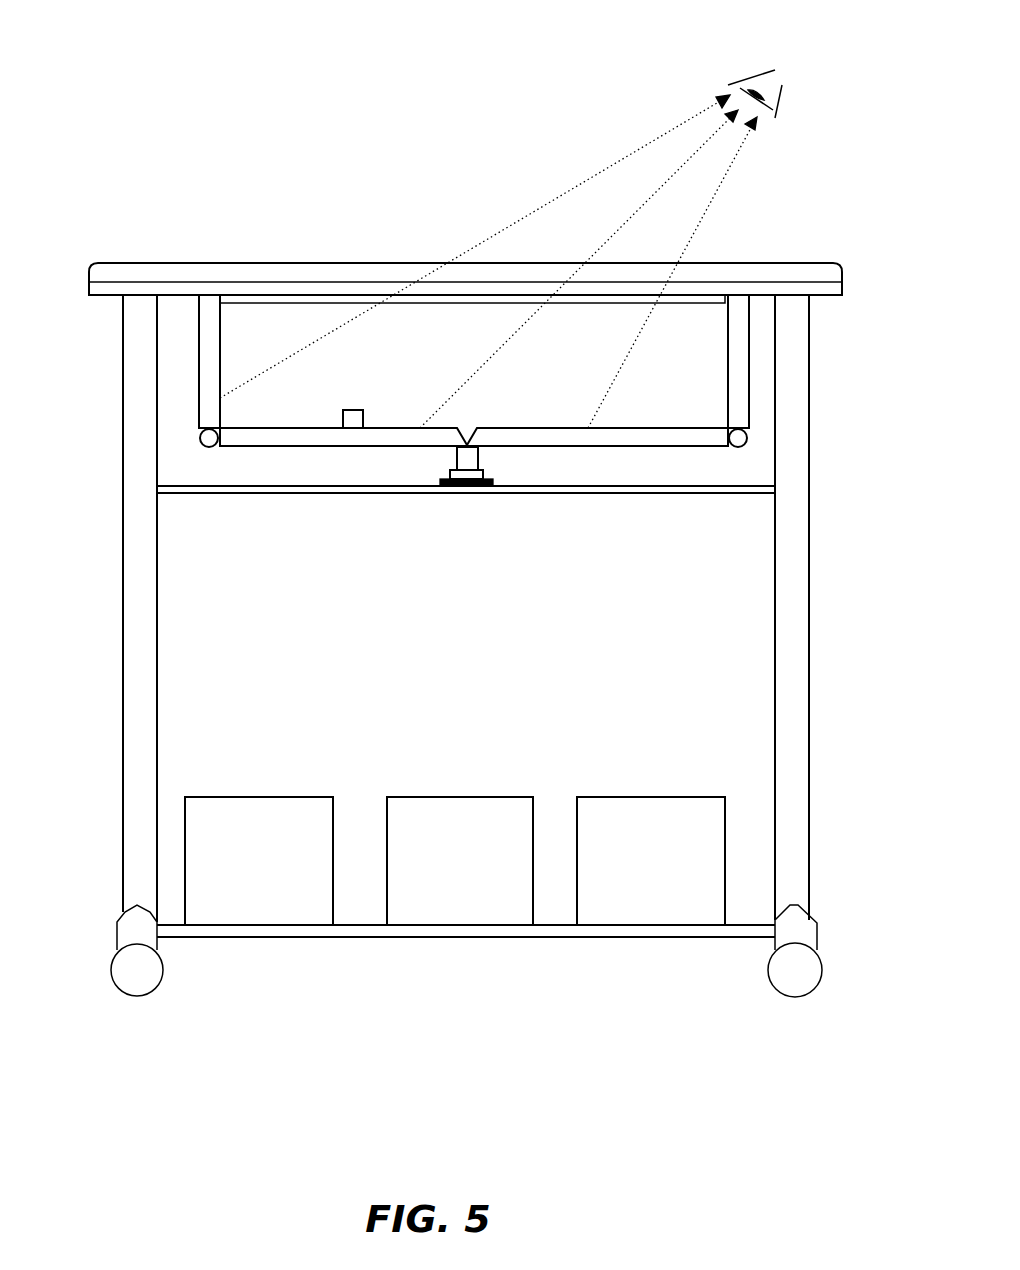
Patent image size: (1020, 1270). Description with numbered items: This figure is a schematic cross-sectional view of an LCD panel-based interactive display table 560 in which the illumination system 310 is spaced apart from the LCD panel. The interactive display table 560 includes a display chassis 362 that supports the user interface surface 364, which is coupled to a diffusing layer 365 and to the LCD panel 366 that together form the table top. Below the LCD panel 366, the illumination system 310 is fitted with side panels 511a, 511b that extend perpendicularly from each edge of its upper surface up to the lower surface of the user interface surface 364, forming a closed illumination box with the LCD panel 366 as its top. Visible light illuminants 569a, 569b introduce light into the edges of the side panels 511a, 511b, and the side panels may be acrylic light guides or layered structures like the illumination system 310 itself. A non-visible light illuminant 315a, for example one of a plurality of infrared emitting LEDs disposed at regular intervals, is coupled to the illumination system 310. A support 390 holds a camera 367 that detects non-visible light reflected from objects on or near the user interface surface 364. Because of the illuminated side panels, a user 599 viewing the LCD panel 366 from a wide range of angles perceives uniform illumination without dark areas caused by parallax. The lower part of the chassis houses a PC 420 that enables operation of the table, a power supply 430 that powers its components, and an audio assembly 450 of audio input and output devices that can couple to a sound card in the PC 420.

The user 599 is at (750, 73).
The user interface surface 364 is at (192, 264).
The diffusing layer 365 is at (720, 282).
The display chassis 362 is at (123, 393).
The side panel 511a is at (220, 339).
The side panel 511b is at (728, 368).
The LCD panel 366 is at (455, 303).
The illumination system 310 is at (530, 428).
The non-visible light illuminant 315a is at (343, 419).
The camera 367 is at (453, 458).
The visible light illuminant 569a is at (218, 447).
The visible light illuminant 569b is at (733, 448).
The support 390 is at (337, 493).
The PC 420 is at (259, 861).
The power supply 430 is at (460, 861).
The audio assembly 450 is at (651, 861).
The interactive display table 560 is at (263, 968).